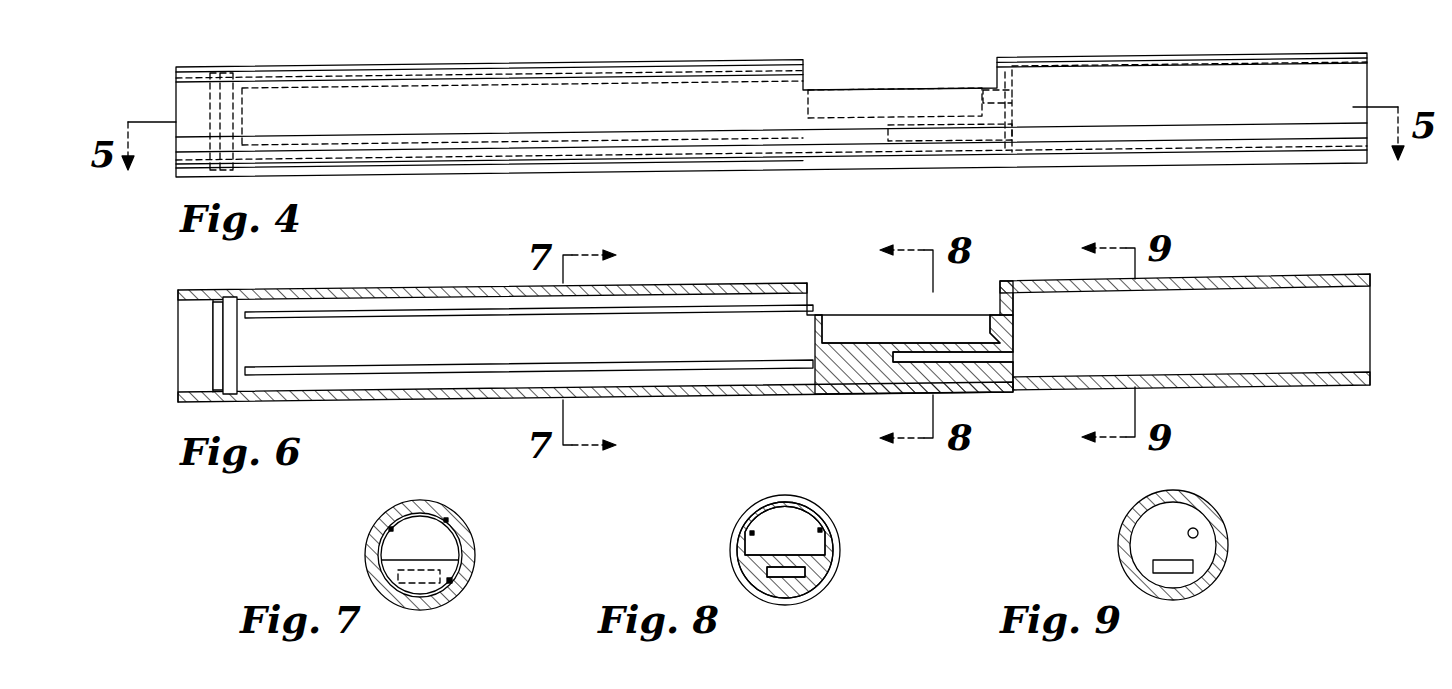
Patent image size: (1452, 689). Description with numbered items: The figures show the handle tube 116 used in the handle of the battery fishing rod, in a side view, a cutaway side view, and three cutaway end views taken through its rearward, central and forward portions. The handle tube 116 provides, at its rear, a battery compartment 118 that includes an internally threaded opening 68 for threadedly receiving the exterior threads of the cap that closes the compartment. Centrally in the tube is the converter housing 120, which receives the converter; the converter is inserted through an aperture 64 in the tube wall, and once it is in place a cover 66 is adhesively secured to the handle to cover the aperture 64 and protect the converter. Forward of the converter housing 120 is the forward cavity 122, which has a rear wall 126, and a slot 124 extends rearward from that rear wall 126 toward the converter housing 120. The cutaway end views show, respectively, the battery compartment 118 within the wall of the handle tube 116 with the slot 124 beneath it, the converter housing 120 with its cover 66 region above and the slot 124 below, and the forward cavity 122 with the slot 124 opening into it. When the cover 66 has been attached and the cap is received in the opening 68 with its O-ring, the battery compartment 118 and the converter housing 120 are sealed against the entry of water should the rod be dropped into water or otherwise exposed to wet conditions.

In FIG. 4, the aperture 64 is at (952, 88).
In FIG. 6, the aperture 64 is at (910, 342).
In FIG. 8, the cover 66 is at (790, 498).
In FIG. 4, the internally threaded opening 68 is at (176, 103).
In FIG. 6, the internally threaded opening 68 is at (178, 328).
In FIG. 4, the handle tube 116 is at (1268, 53).
In FIG. 6, the handle tube 116 is at (1330, 277).
In FIG. 7, the handle tube 116 is at (474, 542).
In FIG. 8, the handle tube 116 is at (836, 566).
In FIG. 9, the handle tube 116 is at (1230, 545).
In FIG. 4, the battery compartment 118 is at (630, 77).
In FIG. 6, the battery compartment 118 is at (403, 338).
In FIG. 7, the battery compartment 118 is at (388, 527).
In FIG. 4, the converter housing 120 is at (852, 100).
In FIG. 6, the converter housing 120 is at (850, 325).
In FIG. 8, the converter housing 120 is at (792, 542).
In FIG. 4, the forward cavity 122 is at (1122, 72).
In FIG. 6, the forward cavity 122 is at (1213, 313).
In FIG. 9, the forward cavity 122 is at (1180, 518).
In FIG. 4, the slot 124 is at (912, 128).
In FIG. 6, the slot 124 is at (1000, 357).
In FIG. 7, the slot 124 is at (414, 576).
In FIG. 8, the slot 124 is at (795, 576).
In FIG. 9, the slot 124 is at (1182, 568).
In FIG. 6, the rear wall 126 is at (1006, 296).